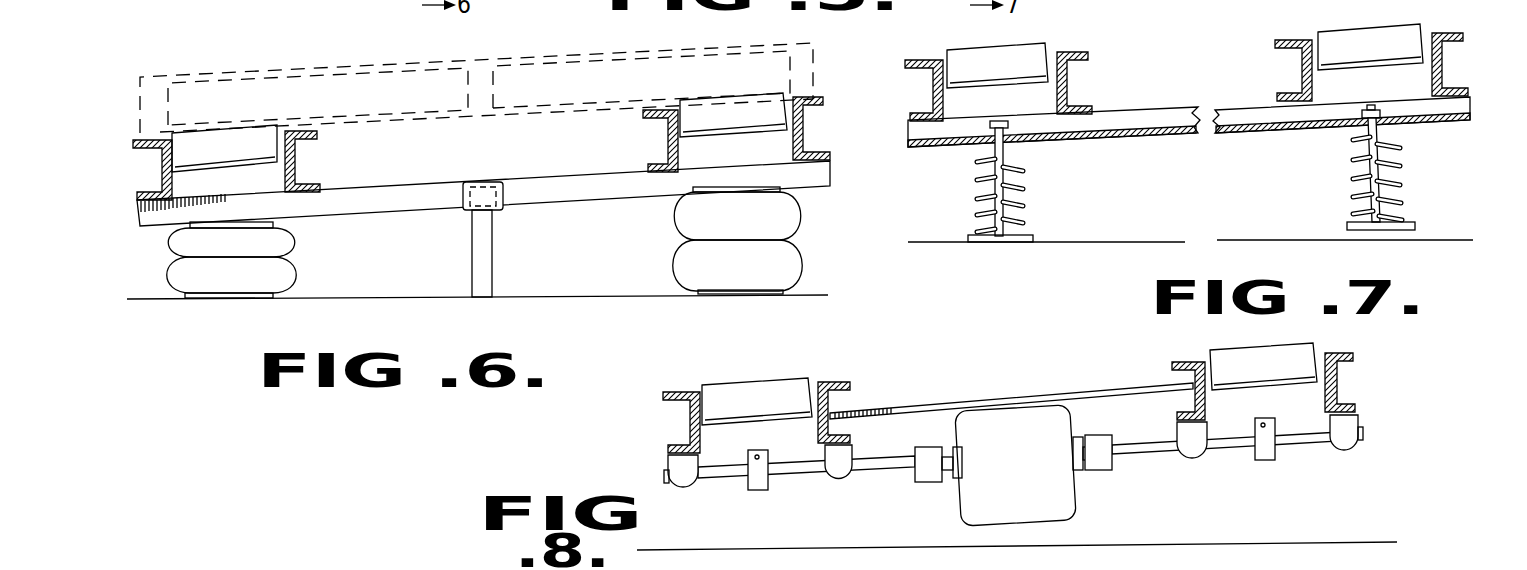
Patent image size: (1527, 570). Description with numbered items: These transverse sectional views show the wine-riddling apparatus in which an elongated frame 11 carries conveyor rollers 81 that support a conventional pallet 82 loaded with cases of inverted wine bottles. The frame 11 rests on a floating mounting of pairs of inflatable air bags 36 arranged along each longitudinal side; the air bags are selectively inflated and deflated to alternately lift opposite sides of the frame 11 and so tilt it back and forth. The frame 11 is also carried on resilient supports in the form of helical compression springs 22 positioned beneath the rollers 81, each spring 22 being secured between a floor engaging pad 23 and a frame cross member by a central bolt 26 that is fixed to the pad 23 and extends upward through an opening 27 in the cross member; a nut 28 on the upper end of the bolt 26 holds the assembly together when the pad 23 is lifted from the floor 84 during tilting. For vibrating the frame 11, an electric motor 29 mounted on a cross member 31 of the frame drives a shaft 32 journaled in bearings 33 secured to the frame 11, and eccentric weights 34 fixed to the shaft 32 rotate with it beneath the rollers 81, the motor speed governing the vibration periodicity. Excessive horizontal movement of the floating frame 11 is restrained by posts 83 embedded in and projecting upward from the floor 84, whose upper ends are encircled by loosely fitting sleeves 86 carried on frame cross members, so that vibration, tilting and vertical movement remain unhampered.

In FIG. 6, the frame 11 is at (150, 180).
In FIG. 7, the frame 11 is at (1082, 82).
In FIG. 8, the frame 11 is at (675, 423).
In FIG. 7, the helical compression spring 22 is at (977, 213).
In FIG. 7, the floor engaging pad 23 is at (1033, 238).
In FIG. 7, the central bolt 26 is at (1002, 210).
In FIG. 7, the opening 27 is at (988, 147).
In FIG. 7, the nut 28 is at (1010, 128).
In FIG. 8, the electric motor 29 is at (1032, 485).
In FIG. 8, the cross member 31 is at (928, 403).
In FIG. 8, the shaft 32 is at (897, 470).
In FIG. 8, the bearing 33 is at (686, 491).
In FIG. 8, the eccentric weight 34 is at (762, 491).
In FIG. 6, the inflatable air bag 36 is at (286, 268).
In FIG. 6, the conveyor roller 81 is at (296, 157).
In FIG. 7, the conveyor roller 81 is at (960, 50).
In FIG. 8, the conveyor roller 81 is at (762, 383).
In FIG. 6, the pallet 82 is at (187, 55).
In FIG. 6, the post 83 is at (492, 260).
In FIG. 6, the floor 84 is at (388, 297).
In FIG. 7, the floor 84 is at (1232, 238).
In FIG. 6, the sleeve 86 is at (503, 194).